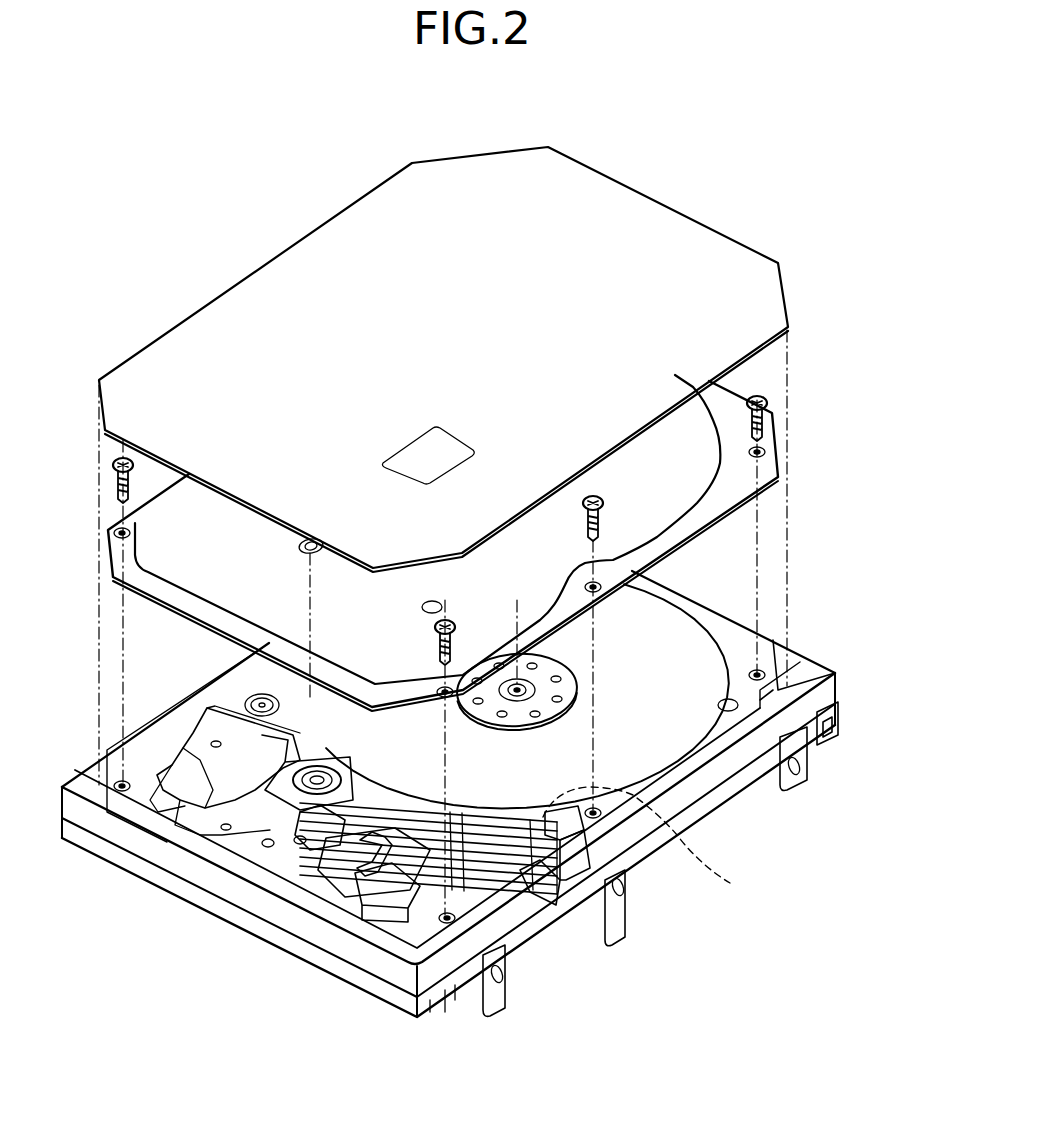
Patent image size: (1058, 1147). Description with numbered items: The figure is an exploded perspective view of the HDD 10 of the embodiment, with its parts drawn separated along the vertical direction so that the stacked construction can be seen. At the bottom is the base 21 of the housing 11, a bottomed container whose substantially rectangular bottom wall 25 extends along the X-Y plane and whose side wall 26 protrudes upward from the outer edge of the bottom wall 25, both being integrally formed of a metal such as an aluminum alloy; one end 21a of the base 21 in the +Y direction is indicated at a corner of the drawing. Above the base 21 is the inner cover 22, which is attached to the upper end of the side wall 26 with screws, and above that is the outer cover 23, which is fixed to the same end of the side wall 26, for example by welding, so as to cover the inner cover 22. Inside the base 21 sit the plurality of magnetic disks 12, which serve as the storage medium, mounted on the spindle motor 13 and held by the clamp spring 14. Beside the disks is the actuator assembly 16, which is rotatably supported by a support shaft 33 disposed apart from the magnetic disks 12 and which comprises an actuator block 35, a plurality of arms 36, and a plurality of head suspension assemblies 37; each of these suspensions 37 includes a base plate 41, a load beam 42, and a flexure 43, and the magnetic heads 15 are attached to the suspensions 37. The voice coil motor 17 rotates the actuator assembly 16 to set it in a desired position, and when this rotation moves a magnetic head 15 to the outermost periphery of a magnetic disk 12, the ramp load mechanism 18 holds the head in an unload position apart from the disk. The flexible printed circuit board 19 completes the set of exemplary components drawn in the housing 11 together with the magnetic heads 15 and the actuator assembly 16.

The HDD 10 is at (692, 156).
The housing 11 is at (782, 258).
The magnetic disks 12 is at (670, 750).
The spindle motor 13 is at (696, 690).
The clamp spring 14 is at (573, 677).
The magnetic heads 15 is at (605, 860).
The actuator assembly 16 is at (408, 878).
The voice coil motor 17 is at (200, 818).
The ramp load mechanism 18 is at (562, 860).
The flexible printed circuit board 19 is at (400, 905).
The base 21 is at (88, 850).
The end of the base 21a is at (806, 651).
The inner cover 22 is at (118, 545).
The outer cover 23 is at (176, 358).
The bottom wall 25 is at (466, 908).
The side wall 26 is at (532, 960).
The support shaft 33 is at (247, 842).
The actuator block 35 is at (290, 848).
The arms 36 is at (340, 852).
The head suspension assemblies 37 is at (594, 935).
The base plate 41 is at (505, 905).
The load beam 42 is at (563, 875).
The flexure 43 is at (650, 843).